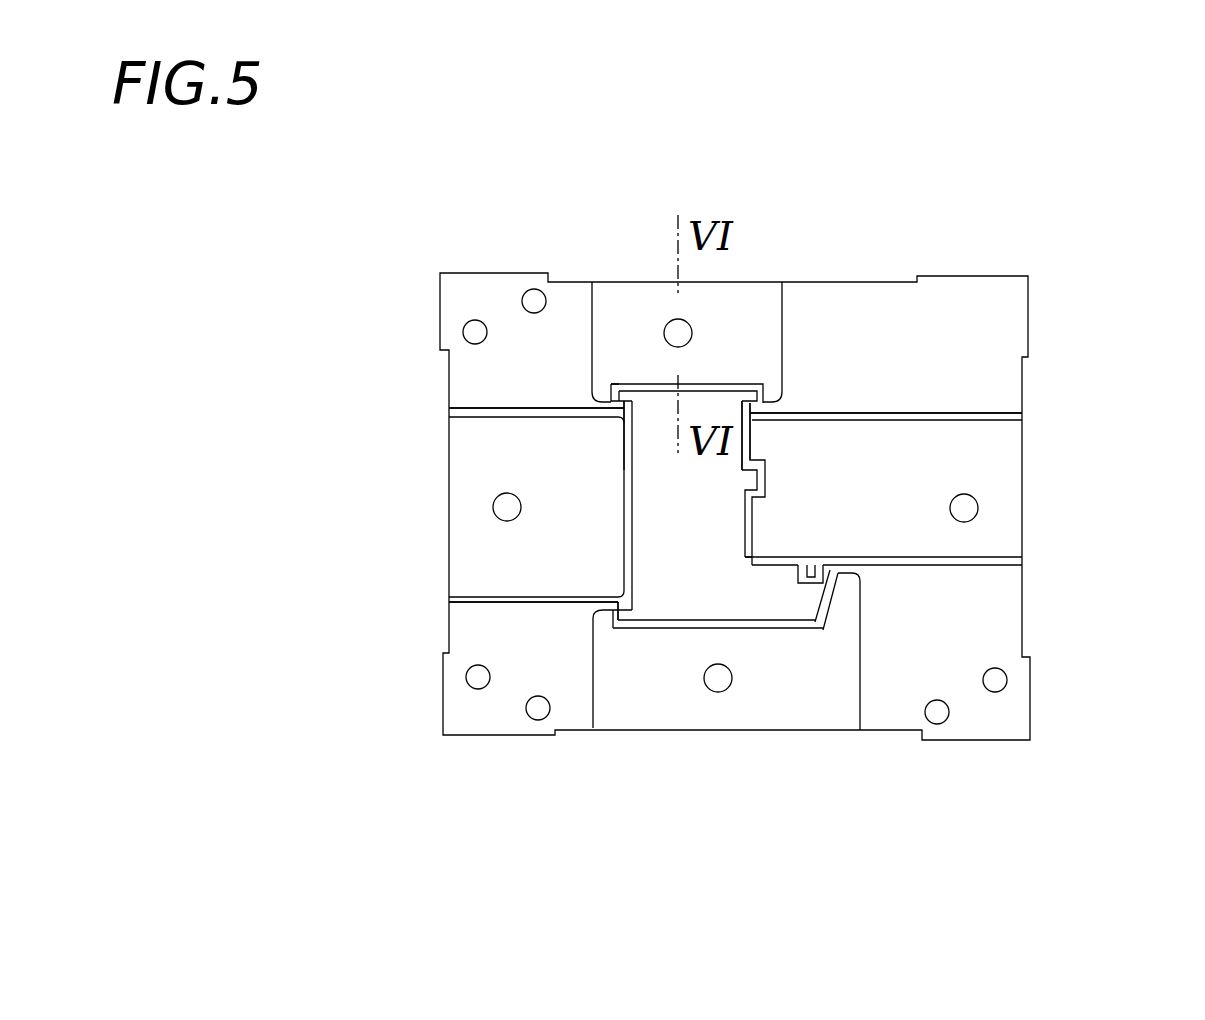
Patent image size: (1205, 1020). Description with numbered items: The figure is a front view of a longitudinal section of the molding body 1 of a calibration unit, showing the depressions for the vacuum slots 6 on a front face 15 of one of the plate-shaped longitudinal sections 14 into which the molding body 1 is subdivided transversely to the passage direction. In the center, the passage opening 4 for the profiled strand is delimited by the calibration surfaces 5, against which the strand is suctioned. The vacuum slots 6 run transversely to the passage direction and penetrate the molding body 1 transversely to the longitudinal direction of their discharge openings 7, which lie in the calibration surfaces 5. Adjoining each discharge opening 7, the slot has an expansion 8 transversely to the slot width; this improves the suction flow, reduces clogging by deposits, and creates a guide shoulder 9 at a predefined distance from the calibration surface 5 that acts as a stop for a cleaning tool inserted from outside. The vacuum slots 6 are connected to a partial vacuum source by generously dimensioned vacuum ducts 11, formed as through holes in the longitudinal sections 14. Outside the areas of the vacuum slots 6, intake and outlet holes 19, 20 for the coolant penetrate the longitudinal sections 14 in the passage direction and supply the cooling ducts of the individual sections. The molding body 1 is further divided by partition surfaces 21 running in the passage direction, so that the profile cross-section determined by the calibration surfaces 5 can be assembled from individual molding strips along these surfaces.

The molding body 1 is at (1052, 283).
The passage opening 4 is at (683, 588).
The calibration surfaces 5 is at (734, 388).
The vacuum slots 6 is at (623, 316).
The discharge openings 7 is at (760, 390).
The expansion 8 is at (658, 300).
The guide shoulder 9 is at (611, 390).
The vacuum ducts 11 is at (678, 333).
The longitudinal sections 14 is at (422, 330).
The front face 15 is at (973, 620).
The intake hole 19 is at (534, 301).
The outlet hole 20 is at (475, 332).
The partition surfaces 21 is at (955, 410).